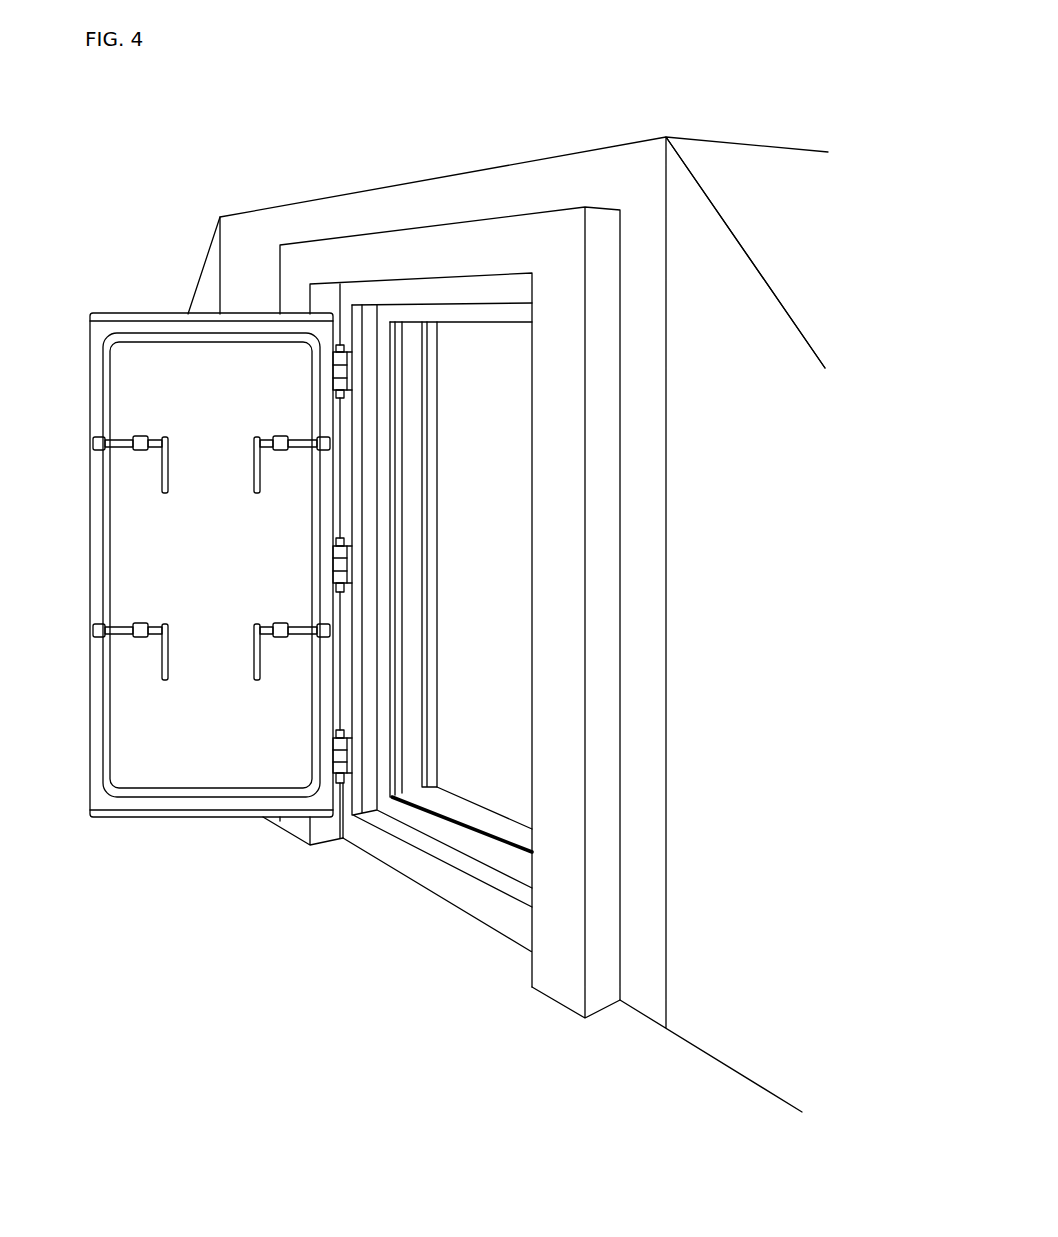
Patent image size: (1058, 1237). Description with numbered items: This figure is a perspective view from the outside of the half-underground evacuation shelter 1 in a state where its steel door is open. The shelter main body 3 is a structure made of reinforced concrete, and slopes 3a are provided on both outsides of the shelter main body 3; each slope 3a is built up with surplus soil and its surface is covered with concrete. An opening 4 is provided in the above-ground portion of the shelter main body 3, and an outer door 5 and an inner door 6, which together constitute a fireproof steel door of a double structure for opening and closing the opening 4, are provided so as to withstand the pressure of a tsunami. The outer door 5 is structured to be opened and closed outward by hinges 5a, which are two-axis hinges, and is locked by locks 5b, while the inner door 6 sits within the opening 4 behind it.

The half-underground evacuation shelter 1 is at (518, 131).
The shelter main body 3 is at (640, 605).
The slope 3a is at (205, 266).
The opening 4 is at (487, 755).
The outer door 5 is at (140, 338).
The hinge 5a is at (340, 785).
The lock 5b is at (160, 472).
The inner door 6 is at (416, 775).